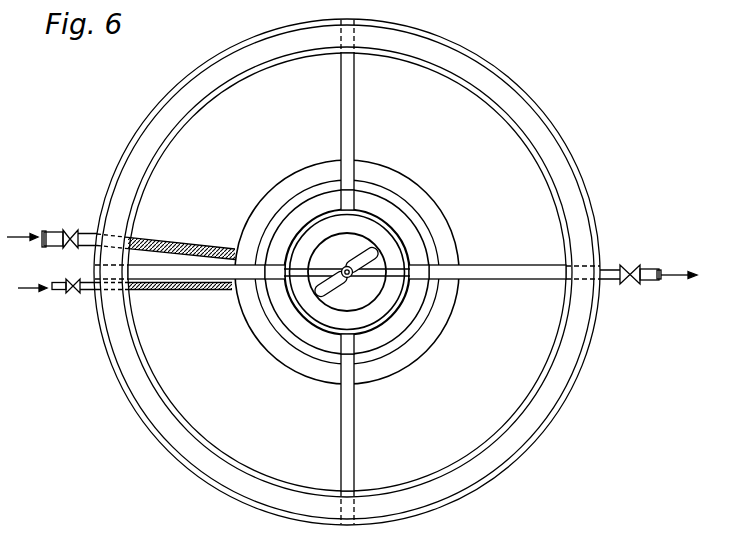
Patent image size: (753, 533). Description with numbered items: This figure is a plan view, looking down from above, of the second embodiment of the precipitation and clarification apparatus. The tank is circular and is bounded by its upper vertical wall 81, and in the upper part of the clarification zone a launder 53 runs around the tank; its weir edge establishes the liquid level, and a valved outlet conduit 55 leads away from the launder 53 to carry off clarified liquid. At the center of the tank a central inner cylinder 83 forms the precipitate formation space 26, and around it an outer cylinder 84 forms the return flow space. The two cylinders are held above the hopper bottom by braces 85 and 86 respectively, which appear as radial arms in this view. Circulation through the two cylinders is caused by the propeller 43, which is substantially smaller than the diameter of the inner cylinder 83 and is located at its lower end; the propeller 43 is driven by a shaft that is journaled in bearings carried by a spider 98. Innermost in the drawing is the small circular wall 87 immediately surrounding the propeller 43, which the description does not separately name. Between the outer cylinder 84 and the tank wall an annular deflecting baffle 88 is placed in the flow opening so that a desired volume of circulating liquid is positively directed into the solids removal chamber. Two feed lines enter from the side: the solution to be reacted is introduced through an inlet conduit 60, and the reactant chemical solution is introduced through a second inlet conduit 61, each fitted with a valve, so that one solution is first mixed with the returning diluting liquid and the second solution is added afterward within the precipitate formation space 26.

The precipitate formation space 26 is at (373, 313).
The propeller 43 is at (376, 279).
The launder 53 is at (468, 68).
The valved outlet conduit 55 is at (608, 266).
The inlet conduit 60 is at (88, 232).
The second inlet conduit 61 is at (84, 294).
The upper vertical wall 81 is at (528, 89).
The central inner cylinder 83 is at (298, 310).
The outer cylinder 84 is at (300, 358).
The braces 85 is at (352, 199).
The braces 86 is at (167, 277).
The inner chamber wall 87 is at (332, 232).
The annular deflecting baffle 88 is at (457, 221).
The spider 98 is at (302, 268).